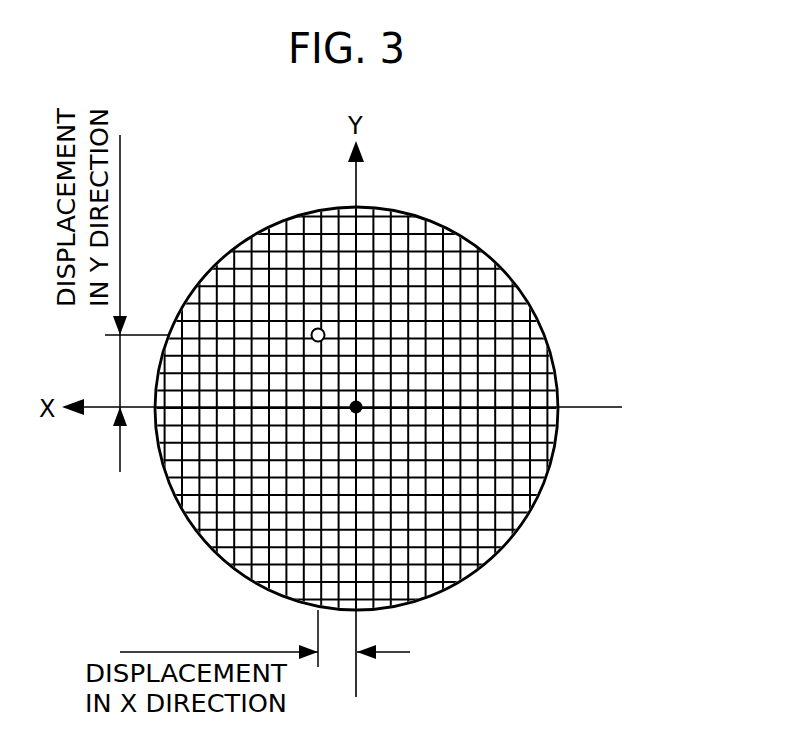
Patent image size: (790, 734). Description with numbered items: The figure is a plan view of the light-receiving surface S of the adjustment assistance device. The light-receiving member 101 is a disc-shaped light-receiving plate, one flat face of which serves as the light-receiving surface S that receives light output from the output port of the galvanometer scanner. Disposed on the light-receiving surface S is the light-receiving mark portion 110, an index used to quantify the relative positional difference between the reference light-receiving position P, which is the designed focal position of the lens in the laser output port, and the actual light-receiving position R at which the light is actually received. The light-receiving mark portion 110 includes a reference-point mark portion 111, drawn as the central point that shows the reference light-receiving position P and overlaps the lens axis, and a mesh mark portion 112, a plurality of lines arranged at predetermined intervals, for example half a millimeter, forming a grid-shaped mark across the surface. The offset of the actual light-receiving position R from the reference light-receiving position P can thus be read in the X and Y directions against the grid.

The light-receiving member 101 is at (433, 219).
The light-receiving surface S is at (388, 371).
The actual light-receiving position R is at (316, 328).
The reference light-receiving position P is at (358, 410).
The reference-point mark portion 111 is at (470, 497).
The mesh mark portion 112 is at (518, 489).
The light-receiving mark portion 110 is at (526, 499).